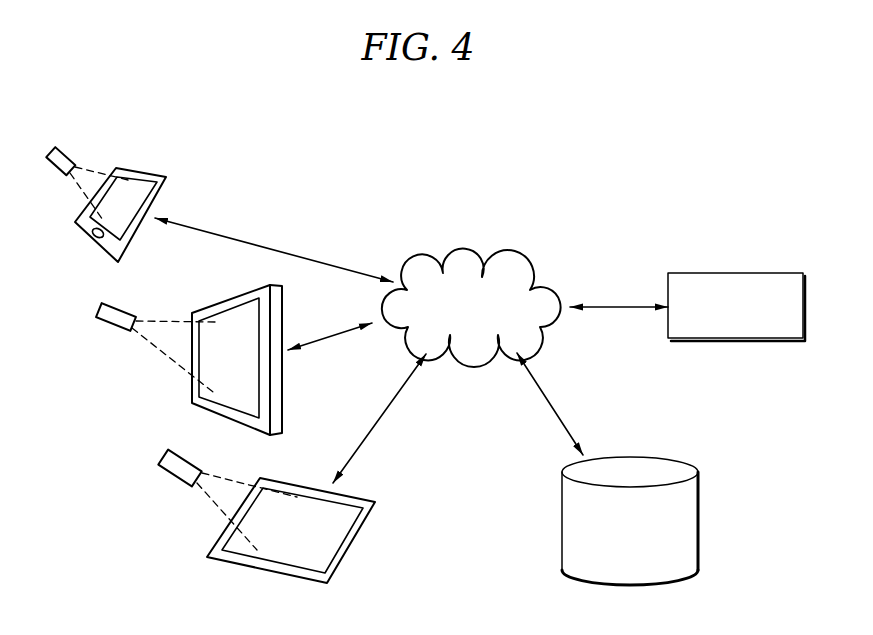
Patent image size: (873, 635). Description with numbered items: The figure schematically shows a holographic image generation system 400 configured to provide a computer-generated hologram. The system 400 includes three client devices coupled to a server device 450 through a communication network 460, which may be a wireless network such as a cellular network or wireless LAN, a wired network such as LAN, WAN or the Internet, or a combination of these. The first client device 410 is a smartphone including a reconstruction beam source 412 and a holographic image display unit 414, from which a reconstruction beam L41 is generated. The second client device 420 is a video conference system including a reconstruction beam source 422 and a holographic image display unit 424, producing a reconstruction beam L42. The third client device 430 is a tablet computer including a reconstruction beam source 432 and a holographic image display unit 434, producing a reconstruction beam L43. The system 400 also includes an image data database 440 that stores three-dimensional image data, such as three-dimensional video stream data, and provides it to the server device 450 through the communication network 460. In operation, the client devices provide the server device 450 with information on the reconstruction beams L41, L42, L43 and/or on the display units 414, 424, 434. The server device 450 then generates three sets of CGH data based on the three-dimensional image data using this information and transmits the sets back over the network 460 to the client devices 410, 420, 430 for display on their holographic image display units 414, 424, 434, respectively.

The holographic image generation system 400 is at (676, 182).
The client device 410 is at (142, 171).
The reconstruction beam source 412 is at (68, 150).
The holographic image display unit 414 is at (128, 208).
The reconstruction beam L41 is at (77, 190).
The client device 420 is at (277, 297).
The reconstruction beam source 422 is at (98, 312).
The holographic image display unit 424 is at (237, 380).
The reconstruction beam L42 is at (153, 347).
The client device 430 is at (360, 520).
The reconstruction beam source 432 is at (168, 470).
The holographic image display unit 434 is at (307, 545).
The reconstruction beam L43 is at (212, 505).
The image data database 440 is at (700, 508).
The server device 450 is at (767, 273).
The communication network 460 is at (510, 272).